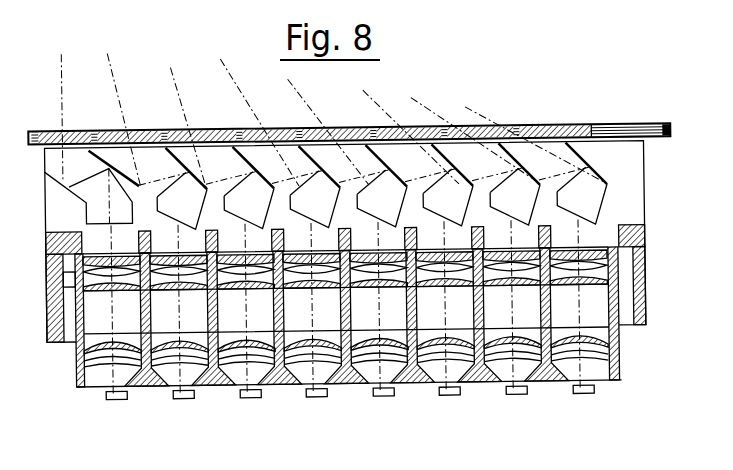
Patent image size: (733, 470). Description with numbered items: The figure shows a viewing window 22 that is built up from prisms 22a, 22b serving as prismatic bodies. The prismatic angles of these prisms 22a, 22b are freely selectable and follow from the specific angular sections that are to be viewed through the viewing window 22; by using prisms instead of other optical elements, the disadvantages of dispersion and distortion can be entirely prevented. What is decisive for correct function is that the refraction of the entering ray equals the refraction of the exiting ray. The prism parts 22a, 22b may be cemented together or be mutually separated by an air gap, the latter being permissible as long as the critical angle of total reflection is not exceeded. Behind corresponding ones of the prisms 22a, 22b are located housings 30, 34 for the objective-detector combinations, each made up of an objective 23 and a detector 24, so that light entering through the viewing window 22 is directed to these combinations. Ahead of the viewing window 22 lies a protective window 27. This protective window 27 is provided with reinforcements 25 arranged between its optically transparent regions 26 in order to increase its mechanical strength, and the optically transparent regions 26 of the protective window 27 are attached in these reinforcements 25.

The viewing window 22 is at (636, 167).
The prism 22a is at (567, 127).
The prism 22b is at (630, 127).
The objective 23 is at (612, 356).
The detector 24 is at (450, 398).
The reinforcements 25 is at (265, 127).
The optically transparent regions 26 is at (323, 127).
The protective window 27 is at (439, 110).
The housing 30 is at (382, 264).
The housing 34 is at (652, 248).